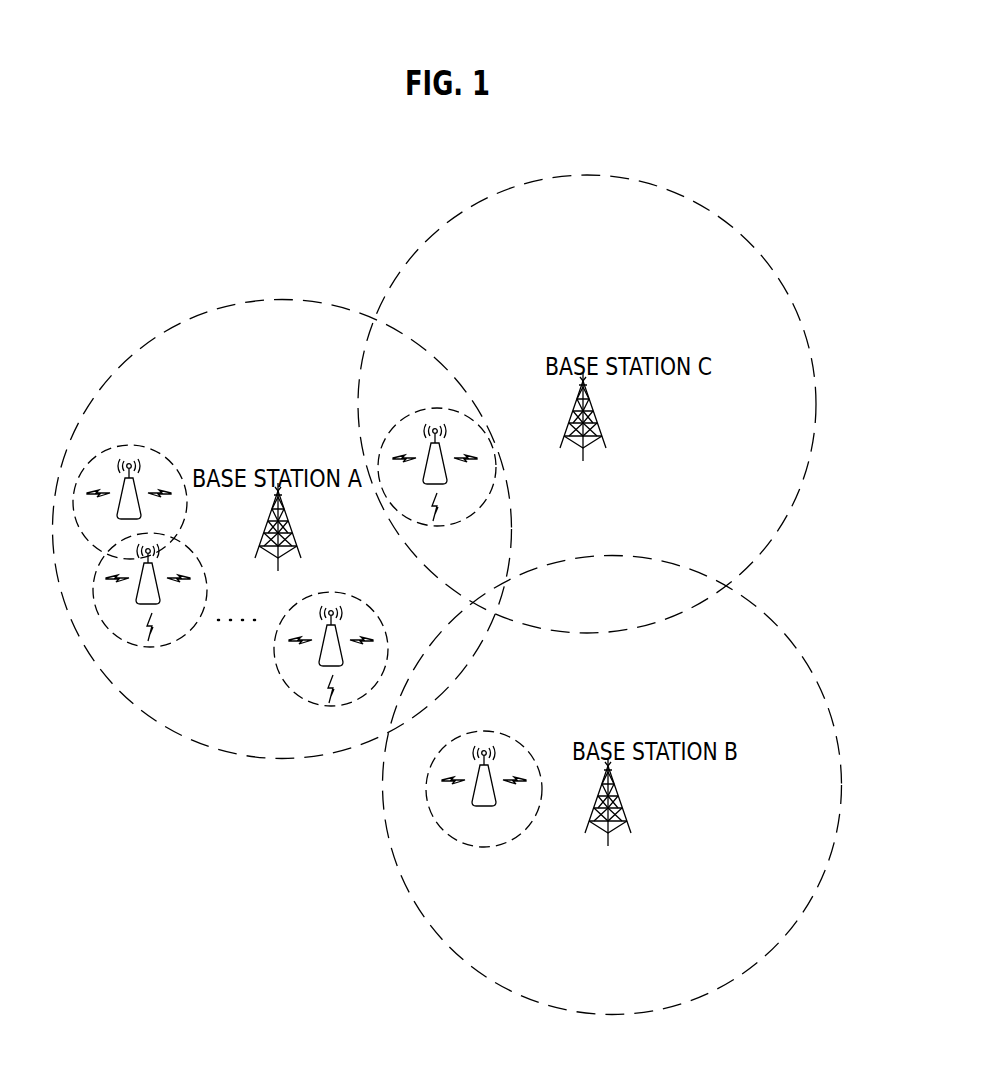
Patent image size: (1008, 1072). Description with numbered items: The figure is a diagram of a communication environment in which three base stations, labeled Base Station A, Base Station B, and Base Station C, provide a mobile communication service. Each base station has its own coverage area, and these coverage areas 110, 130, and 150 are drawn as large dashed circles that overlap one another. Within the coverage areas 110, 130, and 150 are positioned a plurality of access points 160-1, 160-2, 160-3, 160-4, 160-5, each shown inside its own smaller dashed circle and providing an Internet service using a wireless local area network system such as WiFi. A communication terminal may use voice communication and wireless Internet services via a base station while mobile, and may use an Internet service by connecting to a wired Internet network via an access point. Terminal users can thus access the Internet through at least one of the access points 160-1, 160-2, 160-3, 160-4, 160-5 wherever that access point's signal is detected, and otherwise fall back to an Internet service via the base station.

The coverage area 110 is at (233, 307).
The coverage area 130 is at (801, 652).
The coverage area 150 is at (660, 185).
The access point 160-1 is at (134, 481).
The access point 160-2 is at (158, 603).
The access point 160-3 is at (337, 627).
The access point 160-4 is at (486, 806).
The access point 160-5 is at (441, 445).